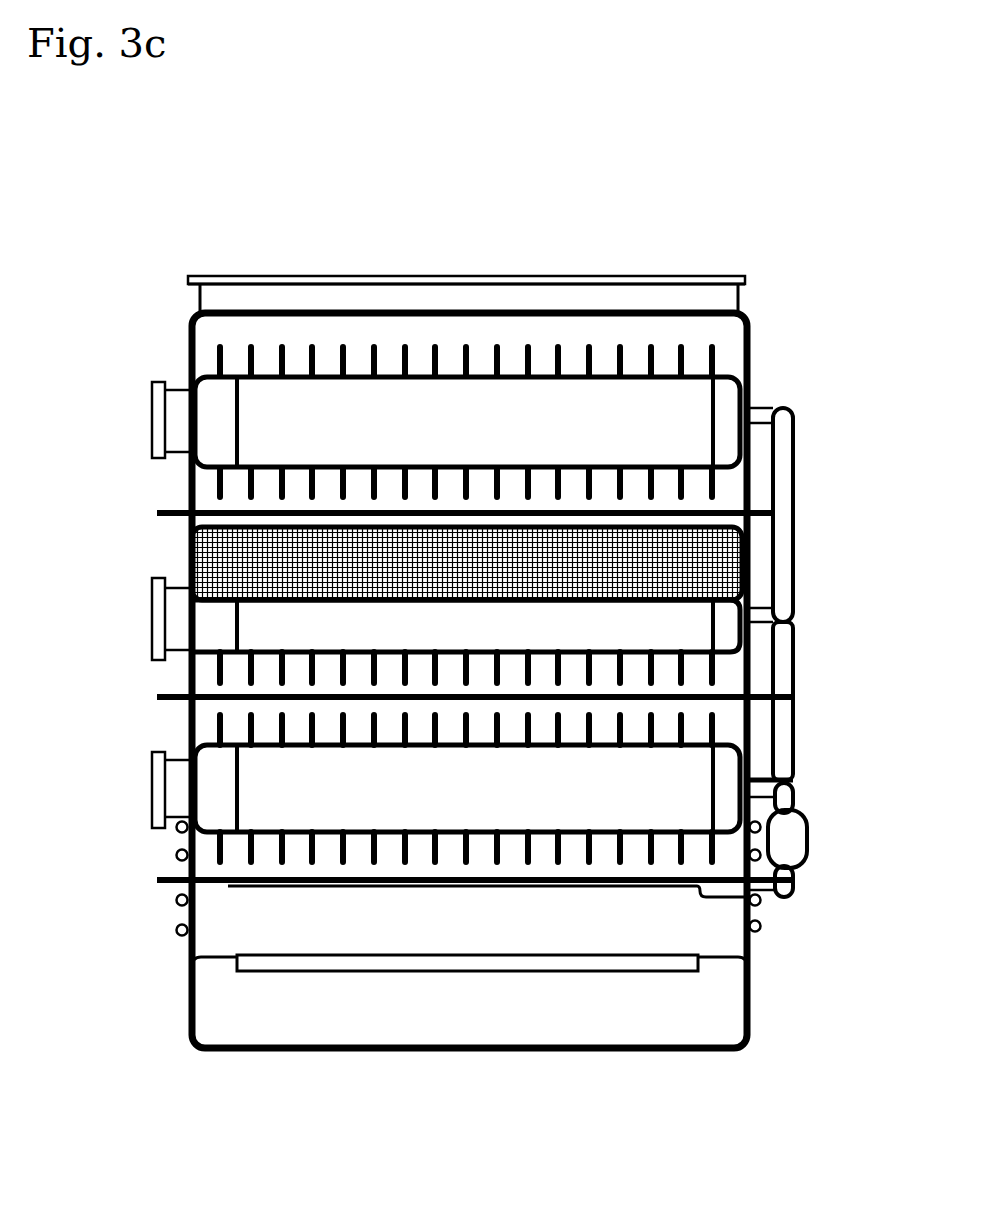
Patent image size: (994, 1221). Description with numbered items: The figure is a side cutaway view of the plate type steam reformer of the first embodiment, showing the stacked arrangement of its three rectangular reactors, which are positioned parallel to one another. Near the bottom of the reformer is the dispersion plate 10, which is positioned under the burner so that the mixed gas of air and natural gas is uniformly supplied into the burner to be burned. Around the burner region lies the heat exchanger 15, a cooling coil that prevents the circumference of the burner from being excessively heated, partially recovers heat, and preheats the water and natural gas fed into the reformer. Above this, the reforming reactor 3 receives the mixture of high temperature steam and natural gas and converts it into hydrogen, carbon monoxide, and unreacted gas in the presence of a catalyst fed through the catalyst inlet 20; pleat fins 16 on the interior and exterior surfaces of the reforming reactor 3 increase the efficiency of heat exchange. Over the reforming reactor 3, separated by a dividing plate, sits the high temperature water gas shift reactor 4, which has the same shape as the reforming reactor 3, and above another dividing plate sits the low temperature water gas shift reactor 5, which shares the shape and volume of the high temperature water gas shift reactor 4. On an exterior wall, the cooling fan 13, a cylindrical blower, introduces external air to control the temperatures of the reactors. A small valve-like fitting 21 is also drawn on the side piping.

The pleat fins 16 is at (195, 357).
The catalyst inlet 20 is at (172, 418).
The low temperature water gas shift reactor 5 is at (195, 467).
The high temperature water gas shift reactor 4 is at (195, 548).
The cooling fan 13 is at (748, 538).
The reforming reactor 3 is at (215, 768).
The valve 21 is at (787, 829).
The heat exchanger 15 is at (177, 902).
The dispersion plate 10 is at (245, 965).